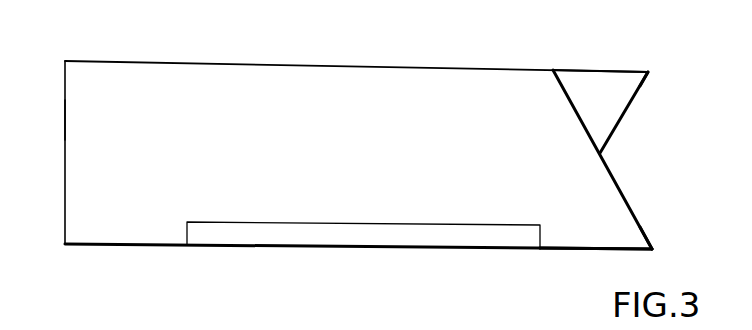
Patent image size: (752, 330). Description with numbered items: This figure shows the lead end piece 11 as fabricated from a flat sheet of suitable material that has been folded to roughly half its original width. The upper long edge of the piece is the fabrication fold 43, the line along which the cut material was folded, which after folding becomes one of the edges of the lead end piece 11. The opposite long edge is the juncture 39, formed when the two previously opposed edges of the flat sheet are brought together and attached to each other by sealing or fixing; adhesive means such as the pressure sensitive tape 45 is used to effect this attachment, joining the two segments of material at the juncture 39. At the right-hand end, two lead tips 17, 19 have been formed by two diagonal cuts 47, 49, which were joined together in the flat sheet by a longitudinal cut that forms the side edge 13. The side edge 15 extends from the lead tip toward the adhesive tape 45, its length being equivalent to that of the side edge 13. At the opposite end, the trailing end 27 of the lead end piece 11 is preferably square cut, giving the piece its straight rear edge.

The lead end piece 11 is at (87, 194).
The side edge 13 is at (583, 69).
The side edge 15 is at (599, 250).
The lead tip 17 is at (648, 72).
The lead tip 19 is at (654, 248).
The trailing end 27 is at (65, 117).
The juncture 39 is at (137, 246).
The fabrication fold 43 is at (118, 62).
The pressure sensitive tape 45 is at (466, 238).
The diagonal cut 47 is at (624, 116).
The diagonal cut 49 is at (625, 197).